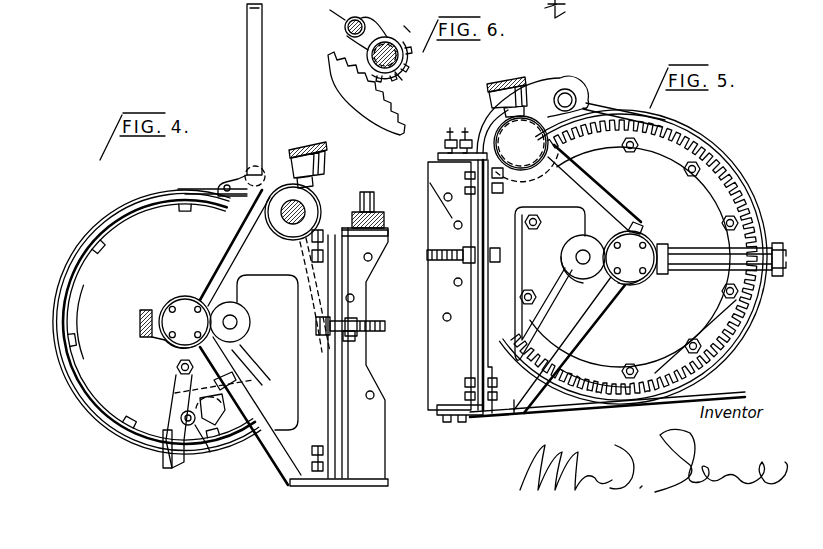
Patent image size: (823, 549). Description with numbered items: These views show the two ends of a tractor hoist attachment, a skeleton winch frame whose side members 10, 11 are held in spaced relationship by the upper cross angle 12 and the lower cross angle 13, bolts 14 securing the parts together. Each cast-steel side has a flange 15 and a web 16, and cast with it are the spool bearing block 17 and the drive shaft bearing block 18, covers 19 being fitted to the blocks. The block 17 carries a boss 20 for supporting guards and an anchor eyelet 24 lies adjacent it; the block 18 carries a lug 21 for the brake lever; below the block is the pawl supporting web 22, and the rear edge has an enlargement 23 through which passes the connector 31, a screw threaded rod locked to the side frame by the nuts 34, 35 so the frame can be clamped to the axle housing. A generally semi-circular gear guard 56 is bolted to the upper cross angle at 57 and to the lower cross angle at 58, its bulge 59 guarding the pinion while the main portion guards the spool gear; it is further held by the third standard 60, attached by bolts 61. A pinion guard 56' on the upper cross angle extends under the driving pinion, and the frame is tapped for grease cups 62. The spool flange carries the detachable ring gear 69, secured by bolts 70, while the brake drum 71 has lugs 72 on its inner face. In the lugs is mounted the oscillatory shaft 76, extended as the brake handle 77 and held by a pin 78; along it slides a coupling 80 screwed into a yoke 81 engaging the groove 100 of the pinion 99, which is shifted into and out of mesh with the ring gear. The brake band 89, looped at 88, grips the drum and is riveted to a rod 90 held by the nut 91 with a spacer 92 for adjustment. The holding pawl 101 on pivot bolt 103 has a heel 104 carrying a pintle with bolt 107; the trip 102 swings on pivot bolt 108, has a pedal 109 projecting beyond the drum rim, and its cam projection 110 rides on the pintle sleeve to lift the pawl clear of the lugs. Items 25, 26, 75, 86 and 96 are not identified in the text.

In FIG. 4, the side member 10 is at (294, 488).
In FIG. 5, the side member 10 is at (586, 313).
In FIG. 5, the side member 11 is at (513, 417).
In FIG. 4, the upper cross angle 12 is at (379, 238).
In FIG. 4, the lower cross angle 13 is at (347, 488).
In FIG. 5, the lower cross angle 13 is at (484, 286).
In FIG. 4, the bolts 14 is at (312, 256).
In FIG. 4, the flange 15 is at (266, 455).
In FIG. 5, the flange 15 is at (583, 338).
In FIG. 4, the web 16 is at (279, 430).
In FIG. 5, the web 16 is at (550, 283).
In FIG. 4, the spool bearing block 17 is at (170, 347).
In FIG. 5, the spool bearing block 17 is at (648, 283).
In FIG. 4, the drive shaft bearing block 18 is at (306, 197).
In FIG. 4, the covers 19 is at (178, 304).
In FIG. 5, the covers 19 is at (645, 240).
In FIG. 4, the boss 20 is at (148, 312).
In FIG. 5, the boss 20 is at (676, 246).
In FIG. 5, the lug 21 is at (594, 103).
In FIG. 4, the pawl supporting web 22 is at (222, 430).
In FIG. 4, the enlargement 23 is at (352, 334).
In FIG. 5, the enlargement 23 is at (492, 264).
In FIG. 4, the anchor eyelet 24 is at (233, 321).
In FIG. 5, the anchor eyelet 24 is at (580, 263).
In FIG. 4, the side plate 25 is at (368, 445).
In FIG. 5, the mounting plate 26 is at (436, 342).
In FIG. 4, the connector 31 is at (373, 320).
In FIG. 5, the connector 31 is at (435, 250).
In FIG. 4, the nut 34 is at (316, 326).
In FIG. 5, the nut 34 is at (530, 232).
In FIG. 4, the nut 35 is at (360, 299).
In FIG. 5, the nut 35 is at (465, 263).
In FIG. 5, the gear guard 56 is at (634, 257).
In FIG. 5, the pinion guard 56' is at (539, 161).
In FIG. 5, the bolting point 57 is at (465, 128).
In FIG. 5, the bolting point 58 is at (461, 427).
In FIG. 5, the bulge 59 is at (558, 80).
In FIG. 5, the third standard 60 is at (708, 266).
In FIG. 5, the bolts 61 is at (780, 278).
In FIG. 4, the grease cups 62 is at (320, 160).
In FIG. 5, the grease cups 62 is at (497, 88).
In FIG. 6, the ring gear 69 is at (335, 72).
In FIG. 5, the ring gear 69 is at (654, 374).
In FIG. 5, the bolts 70 is at (733, 353).
In FIG. 4, the brake drum 71 is at (88, 378).
In FIG. 4, the lugs 72 is at (162, 218).
In FIG. 6, the pin 75 is at (330, 12).
In FIG. 6, the oscillatory shaft 76 is at (363, 18).
In FIG. 5, the oscillatory shaft 76 is at (568, 99).
In FIG. 4, the brake handle 77 is at (247, 82).
In FIG. 5, the pin 78 is at (537, 84).
In FIG. 6, the coupling 80 is at (345, 27).
In FIG. 6, the yoke 81 is at (343, 34).
In FIG. 4, the bracket bar 86 is at (236, 209).
In FIG. 4, the loop 88 is at (232, 179).
In FIG. 4, the brake band 89 is at (113, 213).
In FIG. 4, the rod 90 is at (371, 249).
In FIG. 4, the nut 91 is at (373, 200).
In FIG. 4, the spacer 92 is at (376, 222).
In FIG. 4, the pinion gear 96 is at (288, 226).
In FIG. 6, the pinion gear 96 is at (374, 63).
In FIG. 6, the pinion 99 is at (398, 74).
In FIG. 6, the groove 100 is at (406, 33).
In FIG. 4, the pawl 101 is at (264, 373).
In FIG. 4, the trip 102 is at (173, 401).
In FIG. 4, the pivot bolt 103 is at (222, 385).
In FIG. 4, the heel 104 is at (201, 446).
In FIG. 4, the bolt 107 is at (185, 428).
In FIG. 4, the pivot bolt 108 is at (185, 322).
In FIG. 4, the pedal 109 is at (163, 460).
In FIG. 4, the cam projection 110 is at (200, 404).